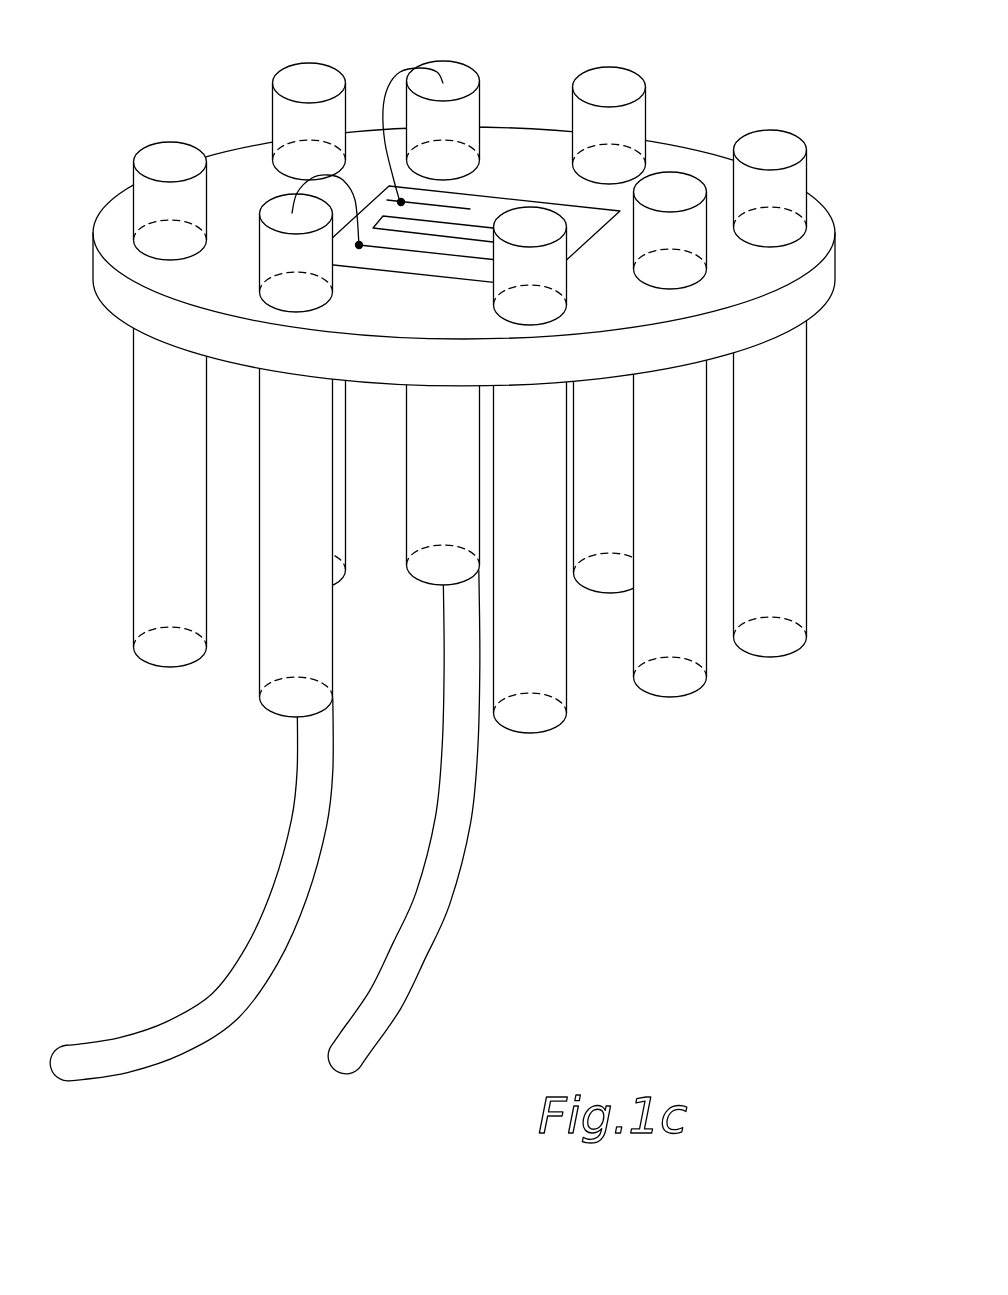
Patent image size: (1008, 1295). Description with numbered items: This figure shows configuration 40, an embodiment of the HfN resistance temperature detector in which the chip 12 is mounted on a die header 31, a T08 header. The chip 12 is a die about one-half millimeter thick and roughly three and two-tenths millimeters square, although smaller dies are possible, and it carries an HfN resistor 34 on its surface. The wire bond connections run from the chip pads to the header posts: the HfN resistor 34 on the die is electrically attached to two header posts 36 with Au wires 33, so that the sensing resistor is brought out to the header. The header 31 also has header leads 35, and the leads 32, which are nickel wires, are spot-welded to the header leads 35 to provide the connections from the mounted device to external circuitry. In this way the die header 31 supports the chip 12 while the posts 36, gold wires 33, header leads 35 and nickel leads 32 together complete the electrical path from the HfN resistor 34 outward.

The configuration 40 is at (489, 532).
The die header 31 is at (835, 233).
The header leads 35 is at (260, 677).
The header posts 36 is at (460, 65).
The leads 32 is at (208, 1002).
The chip 12 is at (463, 163).
The Au wires 33 is at (394, 75).
The HfN resistor 34 is at (470, 209).